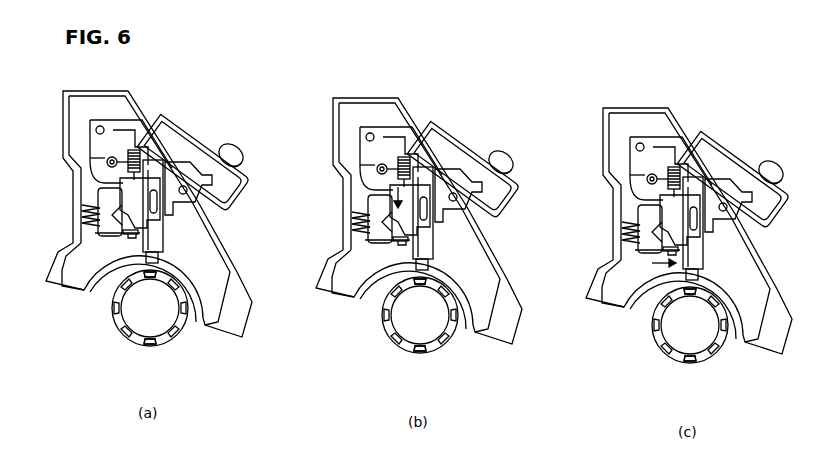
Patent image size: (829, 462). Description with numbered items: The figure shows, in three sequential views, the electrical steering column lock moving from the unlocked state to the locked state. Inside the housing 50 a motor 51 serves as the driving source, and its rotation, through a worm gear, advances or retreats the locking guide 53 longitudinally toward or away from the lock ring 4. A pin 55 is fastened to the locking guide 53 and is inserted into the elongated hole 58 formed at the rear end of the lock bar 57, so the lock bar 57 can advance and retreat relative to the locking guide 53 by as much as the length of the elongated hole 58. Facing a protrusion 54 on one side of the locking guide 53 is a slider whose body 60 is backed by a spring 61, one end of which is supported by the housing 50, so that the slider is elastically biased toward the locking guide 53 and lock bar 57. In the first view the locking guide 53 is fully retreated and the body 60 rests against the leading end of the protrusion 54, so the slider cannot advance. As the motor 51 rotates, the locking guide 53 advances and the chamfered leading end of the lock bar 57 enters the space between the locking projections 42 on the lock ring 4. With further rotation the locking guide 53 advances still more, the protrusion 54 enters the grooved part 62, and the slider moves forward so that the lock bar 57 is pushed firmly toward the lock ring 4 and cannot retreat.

The lock ring 4 is at (158, 345).
The locking projection 42 is at (135, 345).
The housing 50 is at (63, 118).
The motor 51 is at (108, 160).
The locking guide 53 is at (140, 178).
The protrusion 54 is at (122, 190).
The pin 55 is at (158, 182).
The lock bar 57 is at (155, 248).
The elongated hole 58 is at (165, 222).
The body 60 is at (103, 196).
The spring 61 is at (82, 233).
The grooved part 62 is at (100, 226).